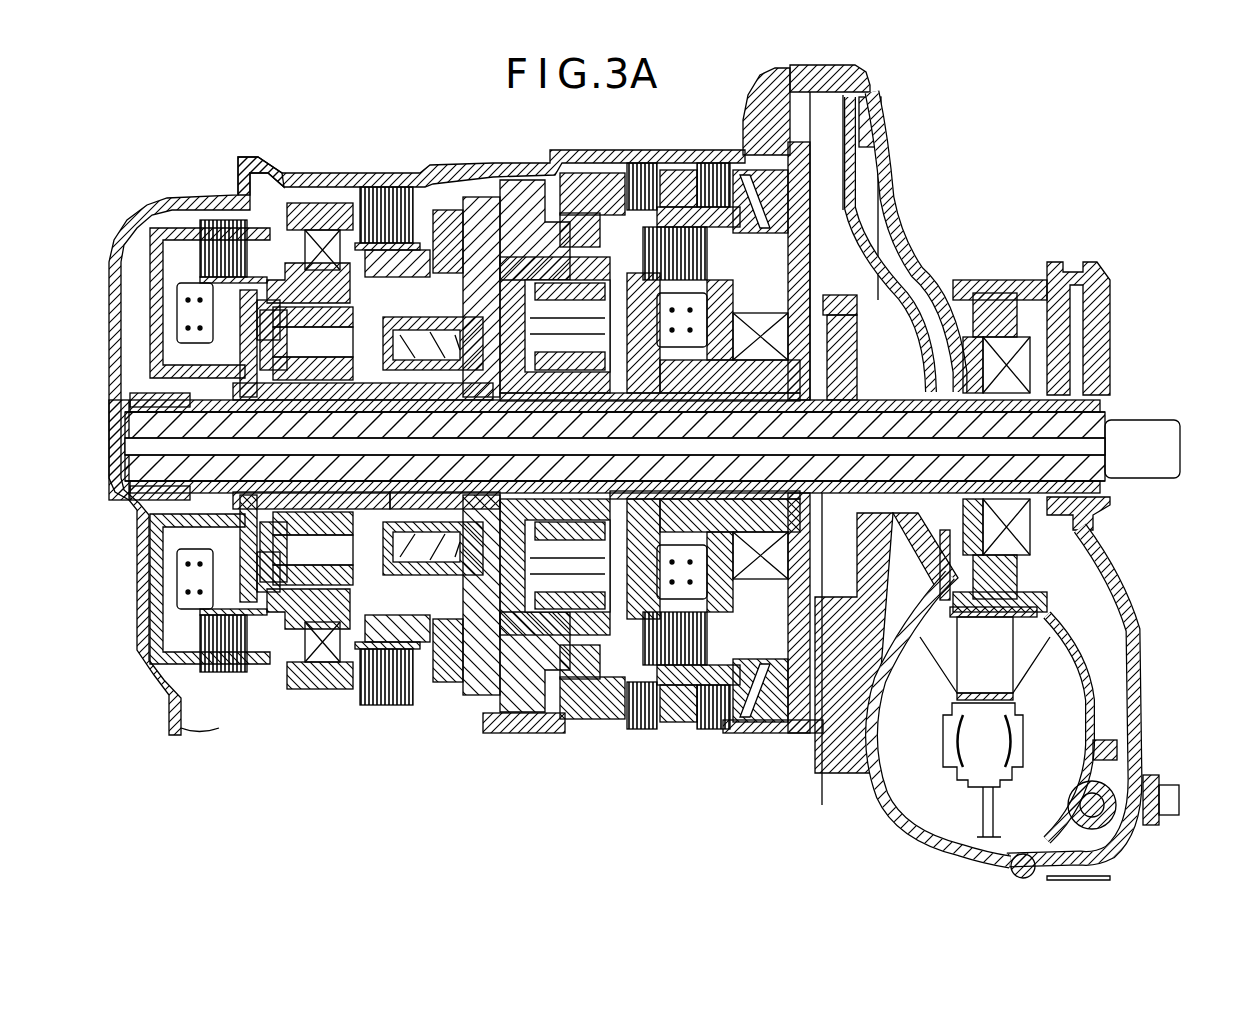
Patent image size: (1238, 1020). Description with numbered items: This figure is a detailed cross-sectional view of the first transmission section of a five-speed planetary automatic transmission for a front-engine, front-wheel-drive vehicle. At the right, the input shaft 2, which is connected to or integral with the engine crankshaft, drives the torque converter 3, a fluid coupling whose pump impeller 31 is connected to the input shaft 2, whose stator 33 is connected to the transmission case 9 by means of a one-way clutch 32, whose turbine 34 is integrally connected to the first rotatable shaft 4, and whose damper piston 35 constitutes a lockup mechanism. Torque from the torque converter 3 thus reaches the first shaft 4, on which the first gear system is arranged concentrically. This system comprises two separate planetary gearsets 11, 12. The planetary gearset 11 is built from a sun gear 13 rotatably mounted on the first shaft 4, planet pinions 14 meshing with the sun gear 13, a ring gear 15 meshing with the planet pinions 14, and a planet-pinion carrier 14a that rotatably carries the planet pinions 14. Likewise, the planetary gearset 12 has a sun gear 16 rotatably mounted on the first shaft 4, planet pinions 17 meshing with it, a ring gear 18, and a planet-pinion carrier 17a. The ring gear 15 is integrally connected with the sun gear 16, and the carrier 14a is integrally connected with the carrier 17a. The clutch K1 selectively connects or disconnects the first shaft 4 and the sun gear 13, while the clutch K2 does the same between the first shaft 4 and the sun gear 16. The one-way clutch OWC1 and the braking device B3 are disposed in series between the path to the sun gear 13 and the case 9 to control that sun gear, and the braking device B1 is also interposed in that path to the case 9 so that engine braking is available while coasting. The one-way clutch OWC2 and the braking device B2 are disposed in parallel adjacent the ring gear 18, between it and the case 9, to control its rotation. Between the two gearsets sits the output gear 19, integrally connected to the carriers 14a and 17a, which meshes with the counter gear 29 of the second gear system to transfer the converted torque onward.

The input shaft 2 is at (1142, 418).
The torque converter 3 is at (955, 860).
The first rotatable shaft 4 is at (1100, 505).
The transmission case 9 is at (133, 628).
The planetary gearset 11 is at (525, 230).
The planetary gearset 12 is at (280, 227).
The sun gear 13 is at (548, 412).
The planet pinions 14 is at (557, 481).
The planet-pinion carrier 14a is at (640, 481).
The ring gear 15 is at (553, 713).
The sun gear 16 is at (312, 486).
The planet pinions 17 is at (297, 595).
The planet-pinion carrier 17a is at (400, 481).
The ring gear 18 is at (297, 677).
The output gear 19 is at (477, 707).
The counter gear 29 is at (513, 727).
The pump impeller 31 is at (960, 770).
The one-way clutch 32 is at (1063, 350).
The stator 33 is at (985, 615).
The turbine 34 is at (1108, 782).
The damper piston 35 is at (1113, 677).
The braking device B1 is at (601, 170).
The braking device B2 is at (386, 185).
The braking device B3 is at (713, 170).
The clutch K1 is at (673, 170).
The clutch K2 is at (190, 680).
The one-way clutch OWC1 is at (805, 295).
The one-way clutch OWC2 is at (316, 226).